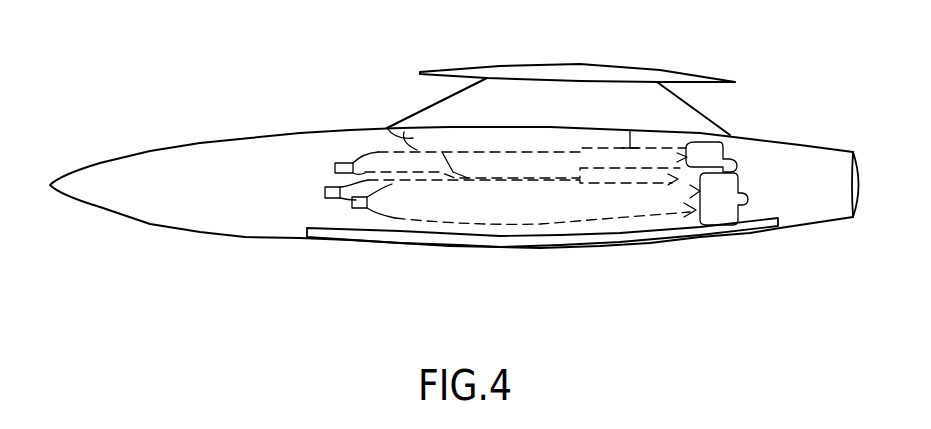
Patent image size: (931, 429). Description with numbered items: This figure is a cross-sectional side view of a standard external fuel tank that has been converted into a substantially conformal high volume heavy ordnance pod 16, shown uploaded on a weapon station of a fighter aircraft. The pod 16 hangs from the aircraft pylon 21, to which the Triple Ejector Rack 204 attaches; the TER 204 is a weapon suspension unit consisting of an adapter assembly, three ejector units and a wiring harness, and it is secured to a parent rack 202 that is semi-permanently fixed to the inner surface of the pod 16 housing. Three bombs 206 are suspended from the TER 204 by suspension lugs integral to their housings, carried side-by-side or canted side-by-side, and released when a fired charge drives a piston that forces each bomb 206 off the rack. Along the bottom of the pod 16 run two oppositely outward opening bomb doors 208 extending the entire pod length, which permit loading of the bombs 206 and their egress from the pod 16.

The high volume heavy ordnance pod 16 is at (245, 237).
The pylon 21 is at (703, 113).
The parent rack 202 is at (403, 143).
The triple ejector rack 204 is at (473, 170).
The bombs 206 is at (528, 208).
The bomb doors 208 is at (627, 242).